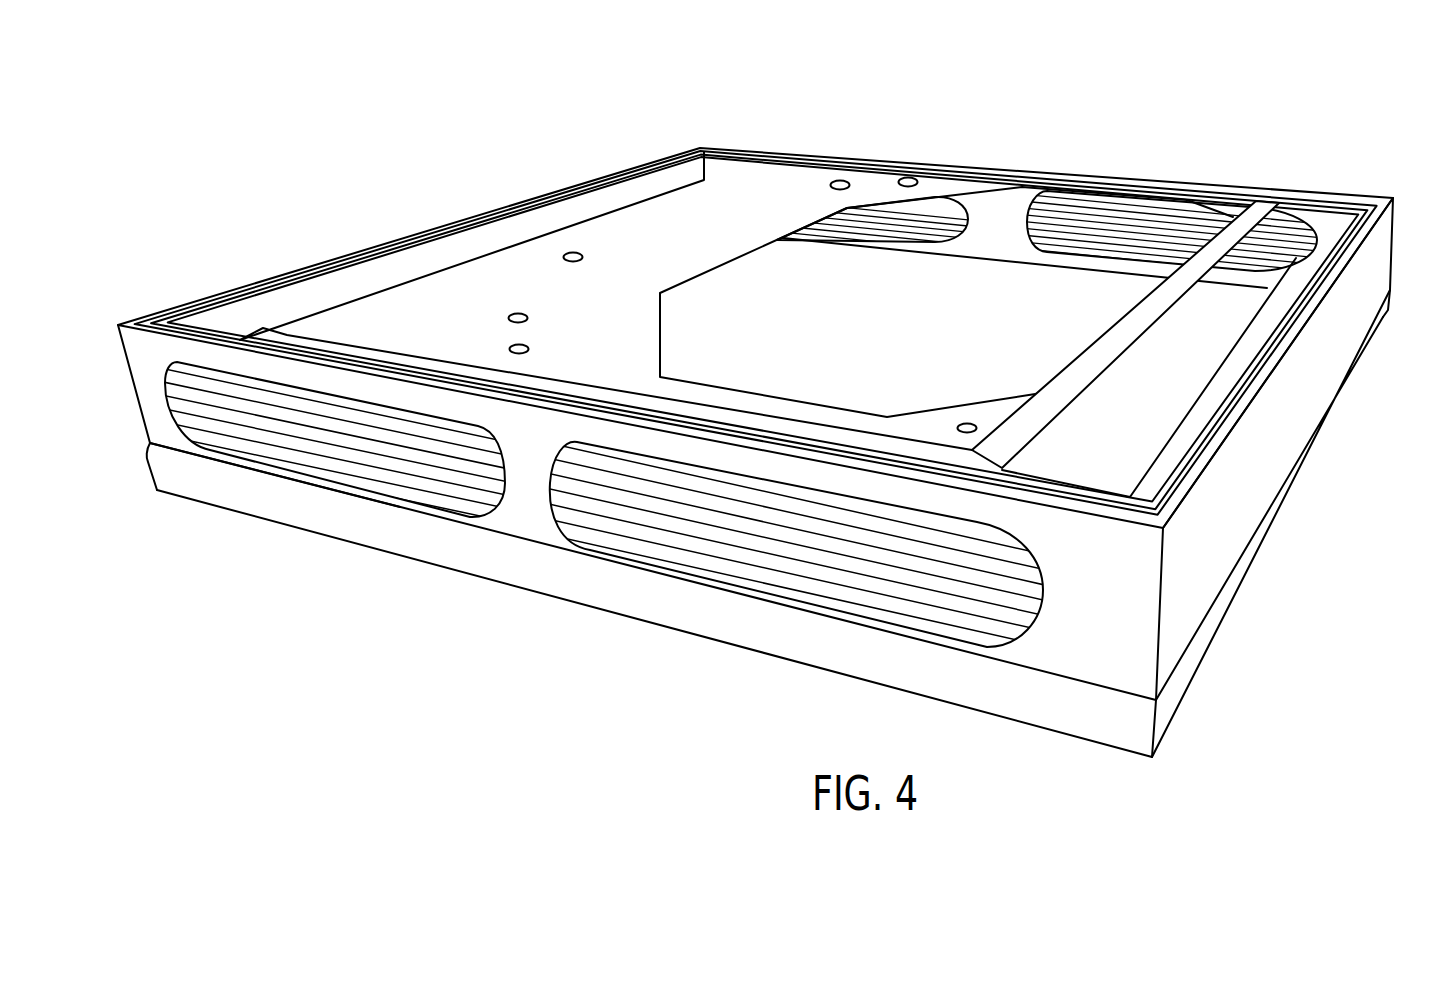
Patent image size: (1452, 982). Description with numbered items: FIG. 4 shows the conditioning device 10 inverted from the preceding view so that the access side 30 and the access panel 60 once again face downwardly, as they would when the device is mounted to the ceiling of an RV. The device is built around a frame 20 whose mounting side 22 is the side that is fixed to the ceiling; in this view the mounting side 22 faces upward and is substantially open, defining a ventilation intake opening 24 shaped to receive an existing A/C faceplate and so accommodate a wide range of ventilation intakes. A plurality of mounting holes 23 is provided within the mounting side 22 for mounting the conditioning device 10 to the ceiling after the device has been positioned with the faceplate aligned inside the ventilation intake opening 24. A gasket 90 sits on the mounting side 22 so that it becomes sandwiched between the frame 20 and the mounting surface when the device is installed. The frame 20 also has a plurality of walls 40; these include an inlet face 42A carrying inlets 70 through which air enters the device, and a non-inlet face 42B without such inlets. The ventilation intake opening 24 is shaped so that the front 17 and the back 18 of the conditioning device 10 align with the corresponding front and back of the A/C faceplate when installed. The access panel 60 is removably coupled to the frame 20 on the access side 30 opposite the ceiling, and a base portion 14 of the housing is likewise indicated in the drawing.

The conditioning device 10 is at (1332, 108).
The housing base 14 is at (1165, 155).
The front 17 is at (1345, 435).
The back 18 is at (223, 263).
The frame 20 is at (1403, 223).
The mounting side 22 is at (773, 182).
The mounting holes 23 is at (908, 182).
The ventilation intake opening 24 is at (709, 268).
The access side 30 is at (170, 443).
The walls 40 is at (357, 283).
The inlet face 42A is at (1043, 637).
The non-inlet face 42B is at (1238, 512).
The access panel 60 is at (1373, 320).
The inlets 70 is at (560, 527).
The gasket 90 is at (1360, 200).